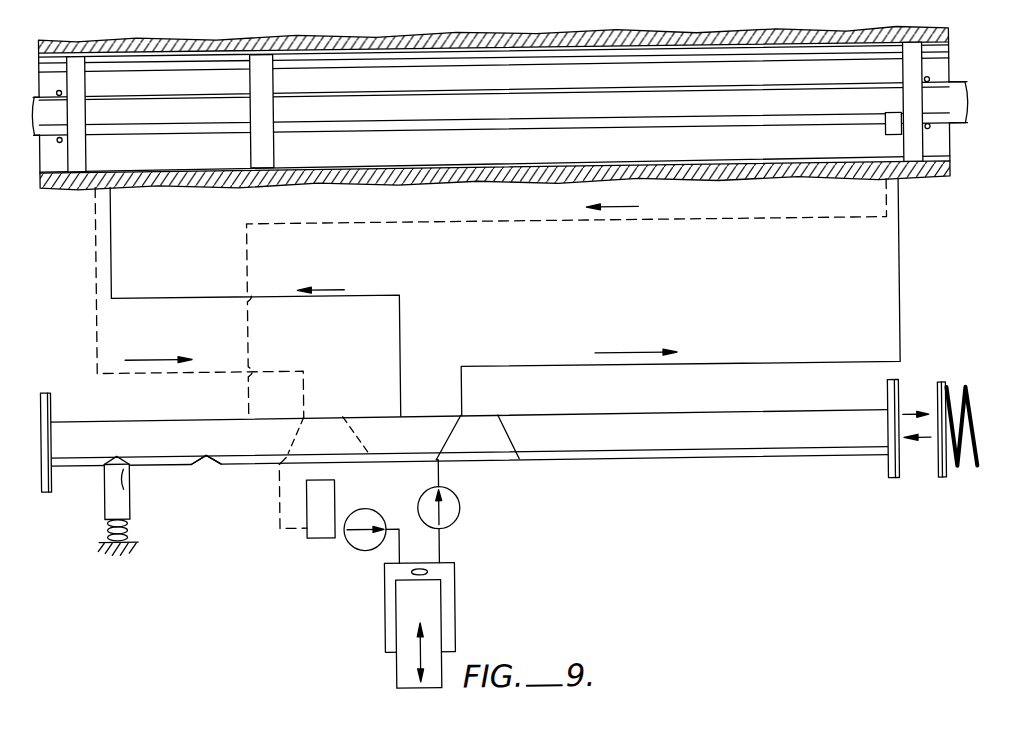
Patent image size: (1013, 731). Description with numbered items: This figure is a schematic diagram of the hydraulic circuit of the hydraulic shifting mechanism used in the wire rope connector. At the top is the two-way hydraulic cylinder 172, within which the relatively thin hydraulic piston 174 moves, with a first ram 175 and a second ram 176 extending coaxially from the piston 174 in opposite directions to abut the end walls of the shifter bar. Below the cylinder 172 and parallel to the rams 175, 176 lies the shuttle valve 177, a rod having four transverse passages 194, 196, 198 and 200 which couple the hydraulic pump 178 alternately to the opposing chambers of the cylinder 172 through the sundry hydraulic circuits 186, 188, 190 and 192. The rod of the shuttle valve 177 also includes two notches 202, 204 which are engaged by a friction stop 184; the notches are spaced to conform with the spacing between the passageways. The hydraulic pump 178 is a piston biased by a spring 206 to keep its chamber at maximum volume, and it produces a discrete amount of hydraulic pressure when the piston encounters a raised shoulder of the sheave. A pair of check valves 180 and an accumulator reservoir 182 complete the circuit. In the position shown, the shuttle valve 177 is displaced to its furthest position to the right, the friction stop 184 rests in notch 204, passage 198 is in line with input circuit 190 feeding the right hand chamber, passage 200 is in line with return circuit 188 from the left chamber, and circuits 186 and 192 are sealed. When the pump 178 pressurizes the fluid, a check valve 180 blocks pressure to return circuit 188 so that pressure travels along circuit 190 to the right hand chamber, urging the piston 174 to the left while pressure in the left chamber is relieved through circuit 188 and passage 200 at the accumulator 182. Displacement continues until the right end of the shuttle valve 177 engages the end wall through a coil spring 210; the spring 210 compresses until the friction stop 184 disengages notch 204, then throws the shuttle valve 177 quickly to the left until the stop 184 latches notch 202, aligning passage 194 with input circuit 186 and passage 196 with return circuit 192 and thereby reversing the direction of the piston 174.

The two-way hydraulic cylinder 172 is at (831, 46).
The hydraulic piston 174 is at (278, 60).
The first ram 175 is at (100, 131).
The second ram 176 is at (940, 119).
The shuttle valve 177 is at (727, 460).
The hydraulic pump 178 is at (452, 602).
The check valve 180 is at (459, 508).
The accumulator reservoir 182 is at (318, 537).
The friction stop 184 is at (129, 499).
The hydraulic circuit 186 is at (380, 293).
The hydraulic circuit 188 is at (221, 368).
The hydraulic circuit 190 is at (491, 365).
The hydraulic circuit 192 is at (248, 398).
The transverse passage 194 is at (518, 442).
The transverse passage 196 is at (357, 428).
The transverse passage 198 is at (448, 444).
The transverse passage 200 is at (287, 445).
The notch 202 is at (204, 460).
The notch 204 is at (120, 468).
The spring 206 is at (425, 571).
The coil spring 210 is at (950, 391).